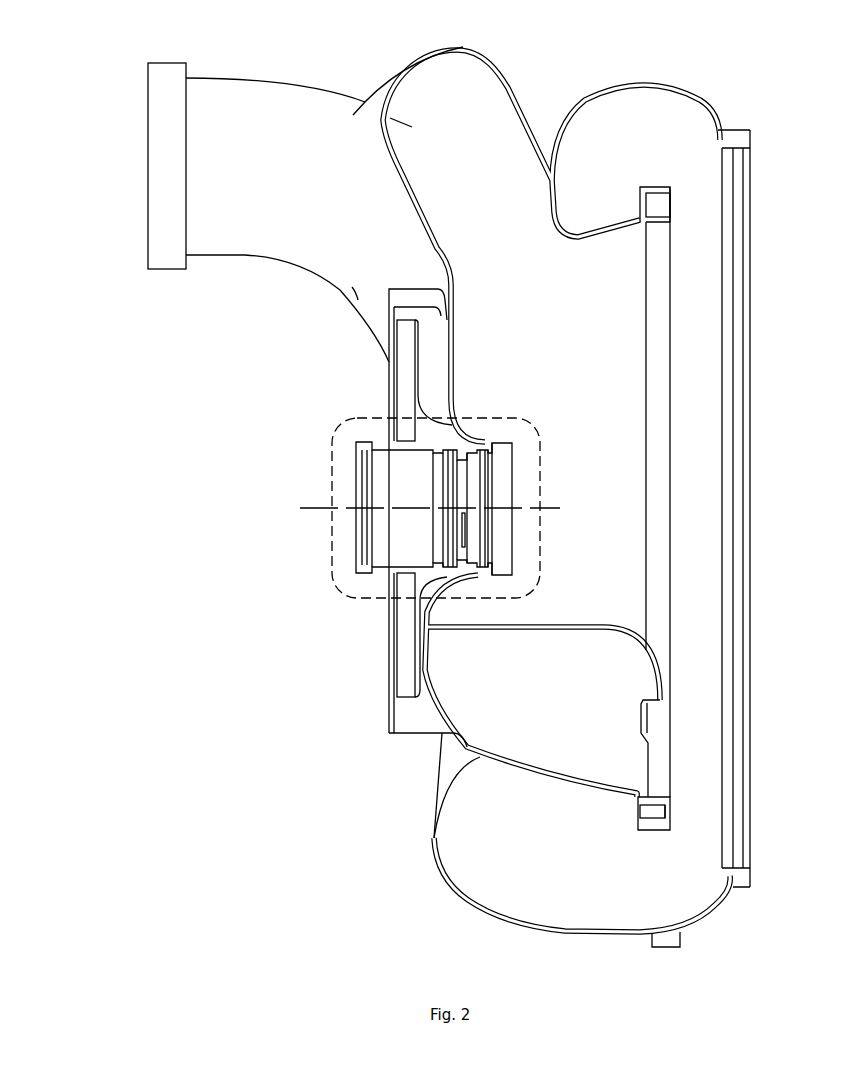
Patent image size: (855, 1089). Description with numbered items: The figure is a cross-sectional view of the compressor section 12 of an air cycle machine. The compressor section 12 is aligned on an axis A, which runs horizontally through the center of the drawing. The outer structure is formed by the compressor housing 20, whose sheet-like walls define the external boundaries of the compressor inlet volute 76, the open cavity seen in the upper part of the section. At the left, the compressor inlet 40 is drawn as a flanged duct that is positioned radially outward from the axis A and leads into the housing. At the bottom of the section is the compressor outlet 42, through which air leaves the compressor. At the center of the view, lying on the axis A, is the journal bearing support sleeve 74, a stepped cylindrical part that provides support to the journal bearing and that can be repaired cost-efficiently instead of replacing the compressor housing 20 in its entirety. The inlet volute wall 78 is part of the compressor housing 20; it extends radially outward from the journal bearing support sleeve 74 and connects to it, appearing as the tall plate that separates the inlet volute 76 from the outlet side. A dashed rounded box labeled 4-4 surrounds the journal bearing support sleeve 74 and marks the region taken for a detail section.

The compressor section 12 is at (152, 327).
The compressor housing 20 is at (545, 148).
The compressor inlet 40 is at (268, 110).
The compressor outlet 42 is at (503, 856).
The journal bearing support sleeve 74 is at (358, 448).
The compressor inlet volute 76 is at (507, 231).
The inlet volute wall 78 is at (457, 427).
The section line 4-4 is at (332, 450).
The axis A is at (550, 508).